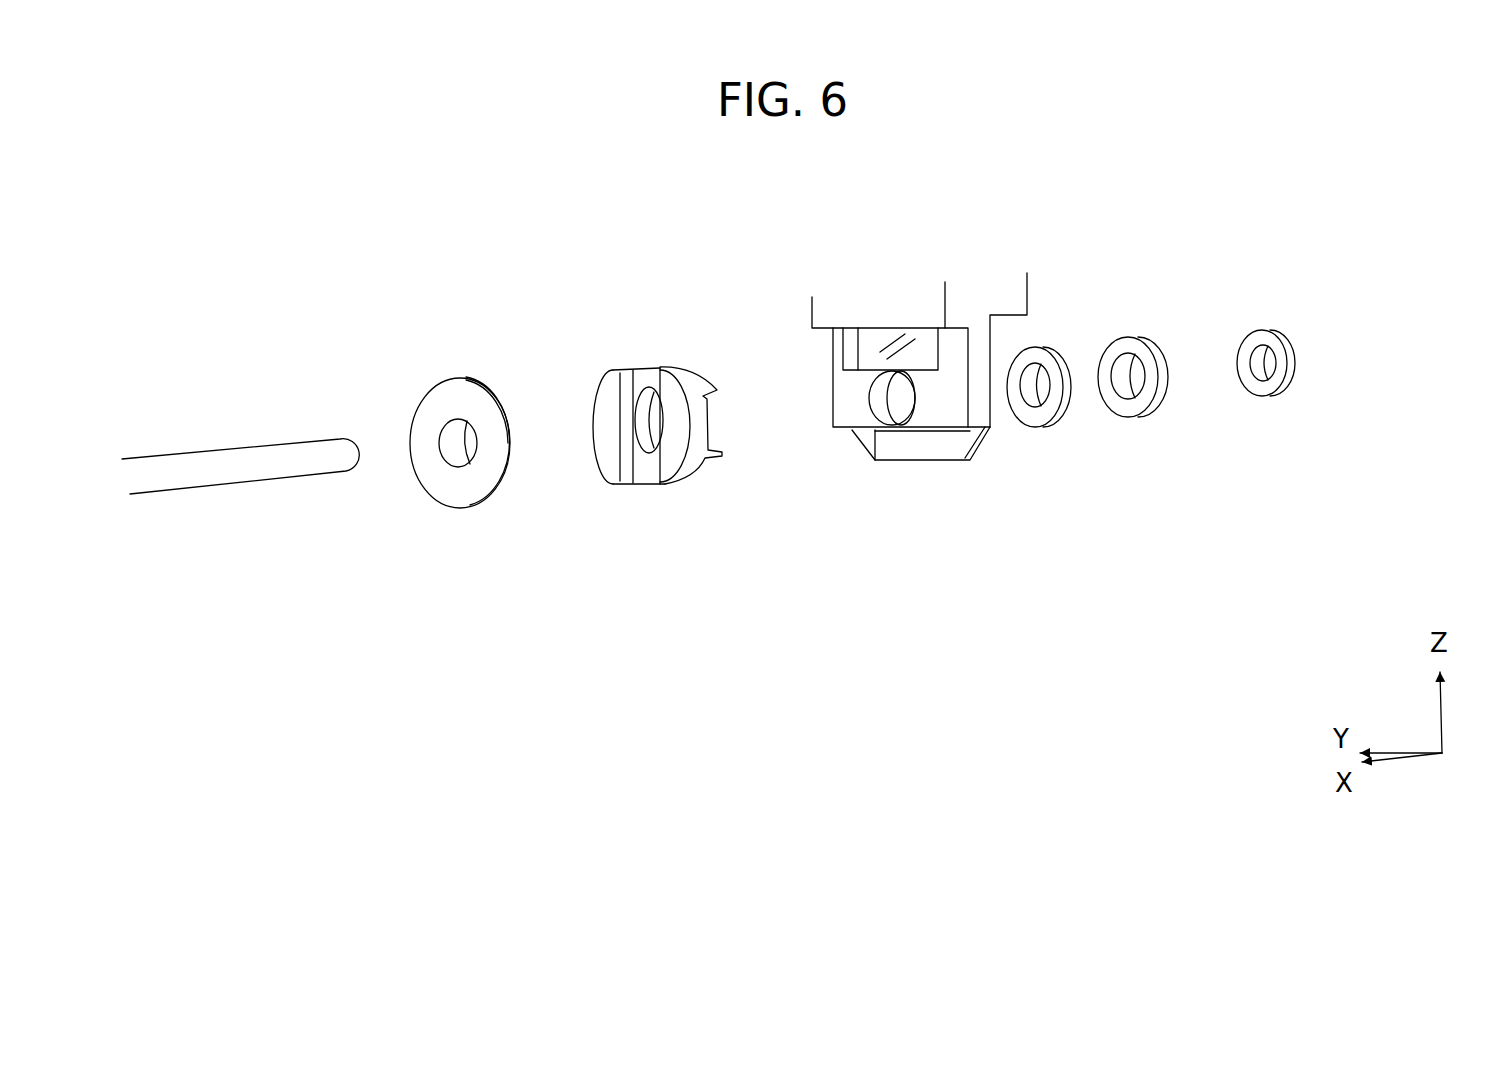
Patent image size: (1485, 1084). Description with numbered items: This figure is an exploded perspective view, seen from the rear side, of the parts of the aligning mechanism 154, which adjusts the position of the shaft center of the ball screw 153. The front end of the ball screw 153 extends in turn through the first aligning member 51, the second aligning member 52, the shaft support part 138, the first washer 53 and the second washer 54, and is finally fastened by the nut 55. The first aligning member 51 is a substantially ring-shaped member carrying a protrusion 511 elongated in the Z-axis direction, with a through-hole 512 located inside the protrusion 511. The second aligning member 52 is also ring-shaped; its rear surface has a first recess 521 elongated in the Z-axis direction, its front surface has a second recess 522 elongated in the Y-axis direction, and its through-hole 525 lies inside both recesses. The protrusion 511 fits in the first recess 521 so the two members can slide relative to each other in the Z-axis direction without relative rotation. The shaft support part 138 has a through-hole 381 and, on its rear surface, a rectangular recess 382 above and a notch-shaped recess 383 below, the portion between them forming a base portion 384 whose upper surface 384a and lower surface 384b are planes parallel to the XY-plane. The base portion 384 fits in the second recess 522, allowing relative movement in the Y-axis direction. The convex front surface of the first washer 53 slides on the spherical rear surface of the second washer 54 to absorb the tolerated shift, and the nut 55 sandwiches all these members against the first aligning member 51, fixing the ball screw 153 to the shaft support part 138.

The aligning mechanism 154 is at (346, 284).
The ball screw 153 is at (182, 477).
The first aligning member 51 is at (474, 467).
The protrusion 511 is at (490, 386).
The through-hole 512 is at (457, 464).
The second aligning member 52 is at (698, 453).
The first recess 521 is at (643, 376).
The second recess 522 is at (712, 416).
The through-hole 525 is at (652, 458).
The shaft support part 138 is at (898, 418).
The through-hole 381 is at (880, 406).
The recess 382 is at (870, 337).
The recess 383 is at (930, 454).
The base portion 384 is at (933, 414).
The upper surface 384a is at (908, 370).
The lower surface 384b is at (873, 461).
The first washer 53 is at (1067, 438).
The second washer 54 is at (1166, 420).
The nut 55 is at (1294, 405).